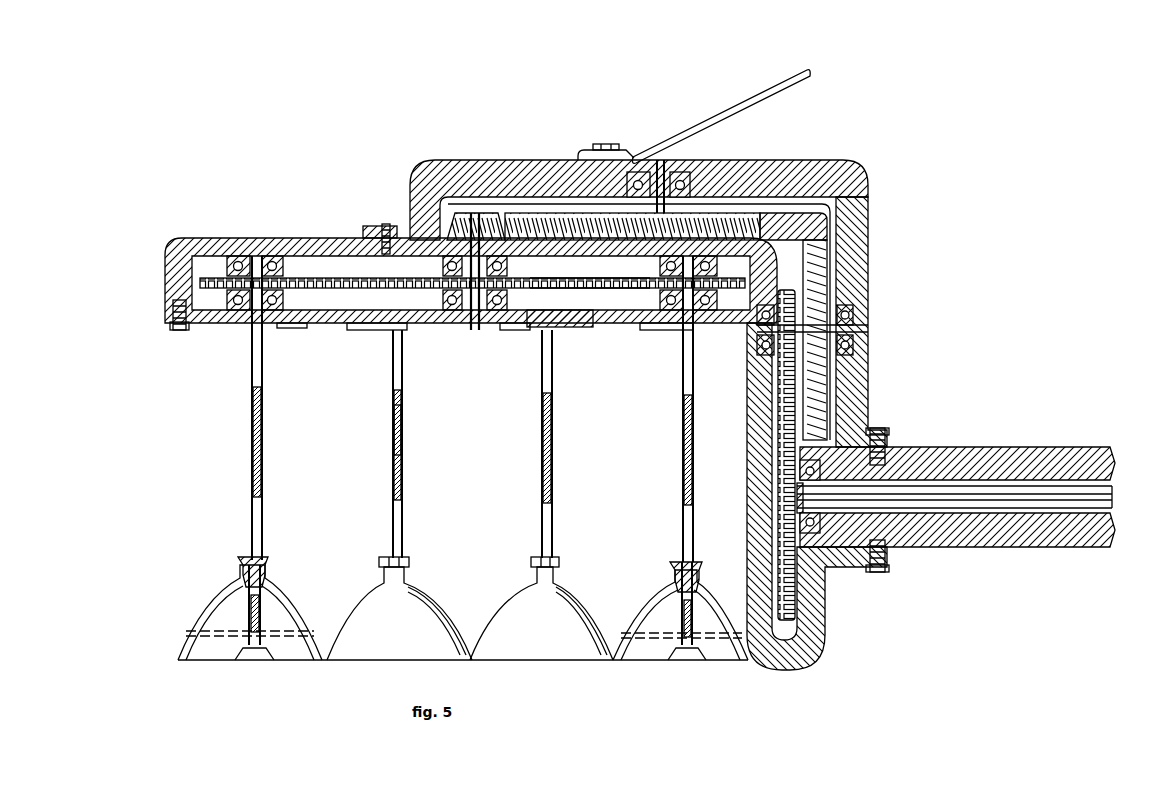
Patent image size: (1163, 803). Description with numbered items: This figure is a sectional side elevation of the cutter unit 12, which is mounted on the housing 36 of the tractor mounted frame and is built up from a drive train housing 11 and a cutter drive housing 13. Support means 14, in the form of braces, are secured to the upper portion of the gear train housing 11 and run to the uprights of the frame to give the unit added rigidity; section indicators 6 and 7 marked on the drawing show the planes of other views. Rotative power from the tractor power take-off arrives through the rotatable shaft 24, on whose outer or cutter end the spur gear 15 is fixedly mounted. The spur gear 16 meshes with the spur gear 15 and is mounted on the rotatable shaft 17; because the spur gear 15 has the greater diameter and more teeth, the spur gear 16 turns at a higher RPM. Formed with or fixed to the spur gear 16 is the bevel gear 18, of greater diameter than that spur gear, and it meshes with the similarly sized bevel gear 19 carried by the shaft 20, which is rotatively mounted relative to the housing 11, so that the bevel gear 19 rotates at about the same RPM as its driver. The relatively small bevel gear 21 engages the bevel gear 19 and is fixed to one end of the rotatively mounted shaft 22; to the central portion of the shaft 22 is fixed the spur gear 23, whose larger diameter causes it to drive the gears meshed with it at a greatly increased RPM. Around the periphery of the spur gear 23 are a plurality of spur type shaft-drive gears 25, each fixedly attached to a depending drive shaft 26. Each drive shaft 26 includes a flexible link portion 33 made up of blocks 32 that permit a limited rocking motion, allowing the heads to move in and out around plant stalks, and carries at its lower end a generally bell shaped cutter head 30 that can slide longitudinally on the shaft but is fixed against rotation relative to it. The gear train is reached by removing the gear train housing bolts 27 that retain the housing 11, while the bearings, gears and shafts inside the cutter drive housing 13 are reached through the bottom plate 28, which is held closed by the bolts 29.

The section line 6- 6 is at (310, 229).
The section line 7- 7 is at (122, 295).
The drive train housing 11 is at (870, 202).
The cutter unit 12 is at (878, 164).
The cutter drive housing 13 is at (332, 240).
The support means 14 is at (735, 98).
The spur gear 15 is at (780, 492).
The spur gear 16 is at (783, 372).
The rotatable shaft 17 is at (858, 328).
The bevel gear 18 is at (826, 388).
The bevel gear 19 is at (775, 210).
The shaft 20 is at (666, 166).
The bevel gear 21 is at (465, 212).
The shaft 22 is at (478, 212).
The spur gear 23 is at (562, 290).
The rotatable shaft 24 is at (1045, 496).
The shaft-drive gears 25 is at (307, 290).
The drive shaft 26 is at (252, 377).
The gear train housing bolts 27 is at (388, 225).
The bottom plate 28 is at (376, 330).
The bolts 29 is at (176, 330).
The cutter head 30 is at (372, 602).
The block 32 is at (404, 453).
The flexible link portion 33 is at (384, 446).
The housing 36 is at (1000, 448).